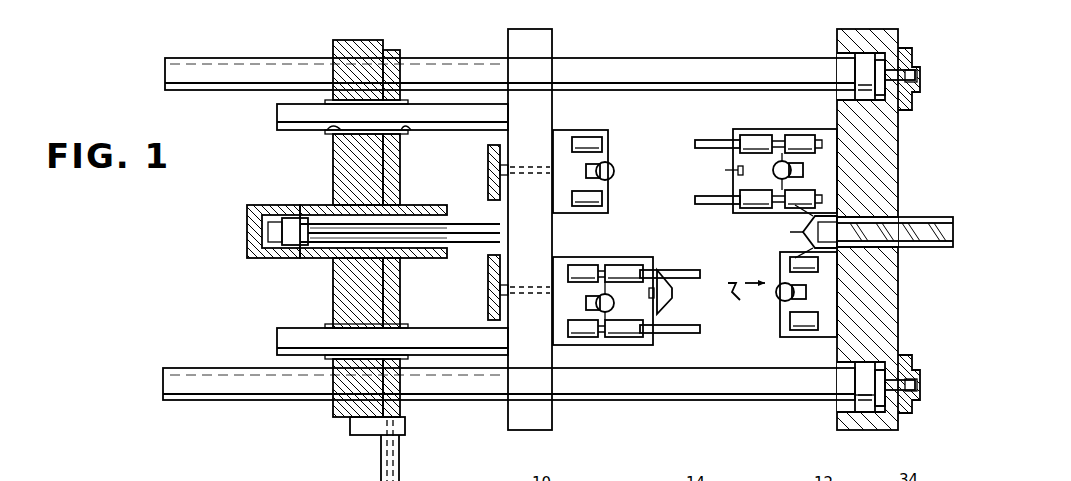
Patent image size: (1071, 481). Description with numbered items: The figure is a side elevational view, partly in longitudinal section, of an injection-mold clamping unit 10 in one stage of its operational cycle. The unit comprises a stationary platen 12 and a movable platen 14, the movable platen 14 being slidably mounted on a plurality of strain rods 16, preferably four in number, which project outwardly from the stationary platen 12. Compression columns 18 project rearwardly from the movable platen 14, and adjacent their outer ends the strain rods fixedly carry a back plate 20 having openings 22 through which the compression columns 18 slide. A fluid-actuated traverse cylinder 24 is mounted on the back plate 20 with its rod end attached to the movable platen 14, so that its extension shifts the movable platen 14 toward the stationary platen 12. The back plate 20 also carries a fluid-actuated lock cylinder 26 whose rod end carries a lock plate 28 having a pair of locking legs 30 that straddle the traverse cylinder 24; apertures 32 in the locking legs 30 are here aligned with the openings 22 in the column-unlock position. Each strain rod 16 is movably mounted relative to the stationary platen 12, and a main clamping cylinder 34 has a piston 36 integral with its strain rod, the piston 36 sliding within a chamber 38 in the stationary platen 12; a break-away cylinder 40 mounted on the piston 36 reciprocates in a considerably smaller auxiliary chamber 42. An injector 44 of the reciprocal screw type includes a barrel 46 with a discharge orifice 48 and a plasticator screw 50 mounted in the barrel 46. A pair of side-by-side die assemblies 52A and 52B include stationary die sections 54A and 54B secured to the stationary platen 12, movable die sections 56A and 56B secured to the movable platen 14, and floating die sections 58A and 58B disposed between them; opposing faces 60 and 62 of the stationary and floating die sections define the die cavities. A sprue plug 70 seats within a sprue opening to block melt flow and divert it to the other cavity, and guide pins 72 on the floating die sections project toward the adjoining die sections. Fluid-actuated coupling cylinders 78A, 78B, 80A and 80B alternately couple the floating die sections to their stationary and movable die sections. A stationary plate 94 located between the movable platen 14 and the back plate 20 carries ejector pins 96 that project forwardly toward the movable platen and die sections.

The injection-mold clamping unit 10 is at (622, 46).
The stationary platen 12 is at (884, 31).
The movable platen 14 is at (512, 48).
The strain rods 16 is at (668, 60).
The compression columns 18 is at (278, 110).
The back plate 20 is at (363, 227).
The openings 22 is at (328, 132).
The traverse cylinder 24 is at (258, 262).
The lock cylinder 26 is at (404, 462).
The lock plate 28 is at (393, 48).
The locking legs 30 is at (400, 180).
The apertures 32 is at (400, 133).
The main clamping cylinder 34 is at (850, 54).
The piston 36 is at (856, 420).
The chamber 38 is at (871, 426).
The break-away cylinder 40 is at (898, 368).
The auxiliary chamber 42 is at (917, 384).
The injector 44 is at (900, 216).
The barrel 46 is at (898, 248).
The discharge orifice 48 is at (802, 232).
The plasticator screw 50 is at (930, 248).
The die assembly 52A is at (607, 155).
The die assembly 52B is at (629, 297).
The stationary die section 54A is at (766, 165).
The stationary die section 54B is at (786, 308).
The movable die section 56A is at (606, 130).
The movable die section 56B is at (570, 258).
The floating die section 58A is at (750, 134).
The floating die section 58B is at (630, 338).
The proximate face 60 is at (786, 334).
The proximate face 62 is at (661, 259).
The sprue plug 70 is at (743, 293).
The guide pins 72 is at (697, 198).
The coupling cylinder 78A is at (775, 177).
The coupling cylinder 78B is at (778, 298).
The coupling cylinder 80A is at (611, 166).
The coupling cylinder 80B is at (599, 311).
The stationary plate 94 is at (490, 297).
The ejector pins 96 is at (497, 166).